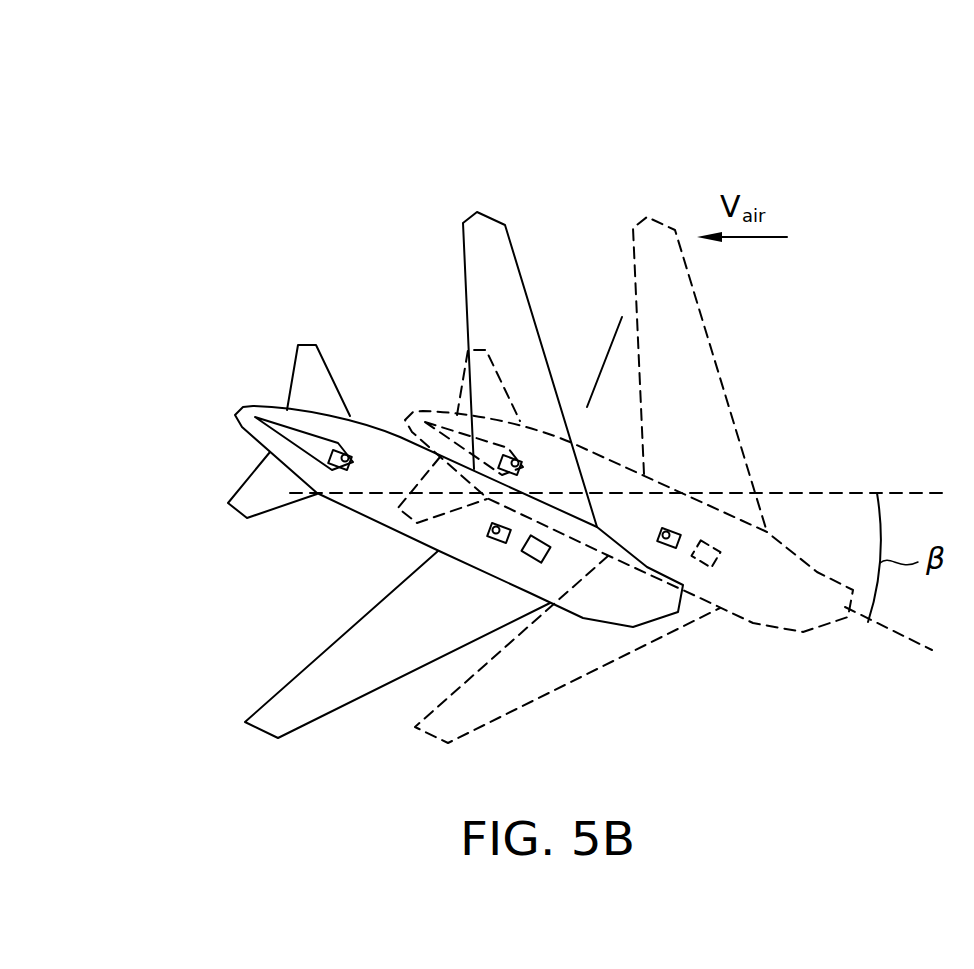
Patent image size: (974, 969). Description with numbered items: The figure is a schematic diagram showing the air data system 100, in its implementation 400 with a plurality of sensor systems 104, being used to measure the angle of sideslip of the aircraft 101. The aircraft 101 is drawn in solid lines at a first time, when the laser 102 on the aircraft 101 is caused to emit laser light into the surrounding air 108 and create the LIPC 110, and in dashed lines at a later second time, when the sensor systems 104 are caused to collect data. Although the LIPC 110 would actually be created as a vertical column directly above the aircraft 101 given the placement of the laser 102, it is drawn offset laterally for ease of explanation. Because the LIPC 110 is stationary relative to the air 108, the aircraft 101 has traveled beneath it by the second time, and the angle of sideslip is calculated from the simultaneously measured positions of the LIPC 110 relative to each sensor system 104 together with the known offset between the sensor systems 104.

The air data system 100 is at (439, 423).
The implementation of air data system 400 is at (200, 90).
The aircraft 101 is at (226, 542).
The laser 102 is at (531, 562).
The sensor system 104 is at (490, 541).
The air 108 is at (734, 113).
The LIPC 110 is at (612, 343).